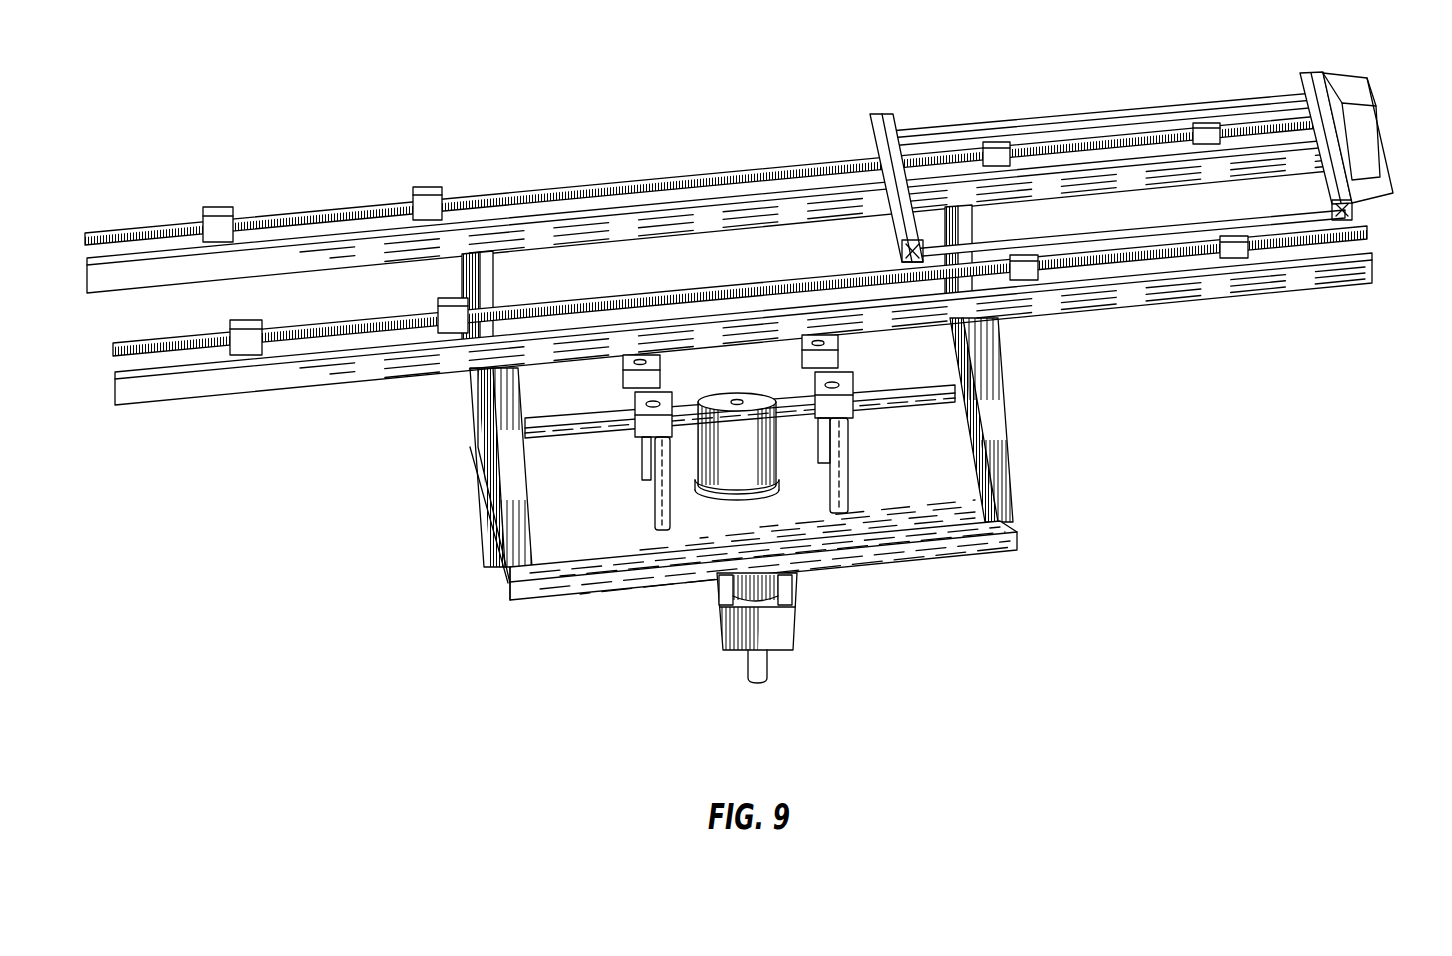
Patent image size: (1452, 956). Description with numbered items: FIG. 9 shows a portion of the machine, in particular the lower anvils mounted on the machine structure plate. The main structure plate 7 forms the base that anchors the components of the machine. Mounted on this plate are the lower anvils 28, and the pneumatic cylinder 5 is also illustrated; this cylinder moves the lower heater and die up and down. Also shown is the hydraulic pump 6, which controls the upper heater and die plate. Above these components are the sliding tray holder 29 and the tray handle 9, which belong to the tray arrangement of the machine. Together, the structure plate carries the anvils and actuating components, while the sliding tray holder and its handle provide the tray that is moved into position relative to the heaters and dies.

The pneumatic cylinder 5 is at (720, 473).
The hydraulic pump 6 is at (778, 627).
The main structure plate 7 is at (505, 583).
The tray handle 9 is at (1373, 138).
The lower anvils 28 is at (837, 340).
The sliding tray holder 29 is at (1058, 127).